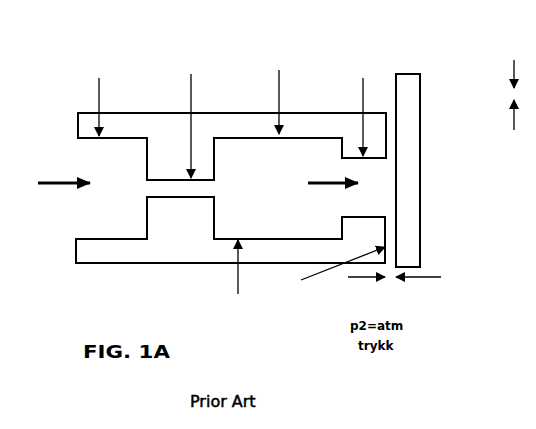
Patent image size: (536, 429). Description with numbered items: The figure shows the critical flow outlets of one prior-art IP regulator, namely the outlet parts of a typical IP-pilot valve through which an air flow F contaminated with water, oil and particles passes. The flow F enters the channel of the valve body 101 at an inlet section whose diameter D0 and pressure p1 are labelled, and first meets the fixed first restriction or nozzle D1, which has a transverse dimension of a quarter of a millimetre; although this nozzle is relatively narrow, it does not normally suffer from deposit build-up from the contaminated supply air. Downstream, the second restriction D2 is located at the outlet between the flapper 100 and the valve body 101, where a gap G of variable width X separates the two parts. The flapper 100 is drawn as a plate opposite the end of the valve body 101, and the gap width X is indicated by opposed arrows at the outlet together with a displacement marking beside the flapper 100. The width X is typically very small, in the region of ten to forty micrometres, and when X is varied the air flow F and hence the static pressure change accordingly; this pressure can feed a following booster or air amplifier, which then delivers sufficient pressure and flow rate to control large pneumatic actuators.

The flapper 100 is at (420, 178).
The valve body 101 is at (104, 263).
The air flow F is at (196, 167).
The inlet pressure at D0' section p1 is at (80, 94).
The first restriction or nozzle D1 is at (205, 152).
The channel diameter with pressure p0 and velocity v0 D0 is at (281, 72).
The second restriction D2 is at (365, 103).
The gap width X is at (434, 174).
The gap between nozzle and plate G is at (333, 284).